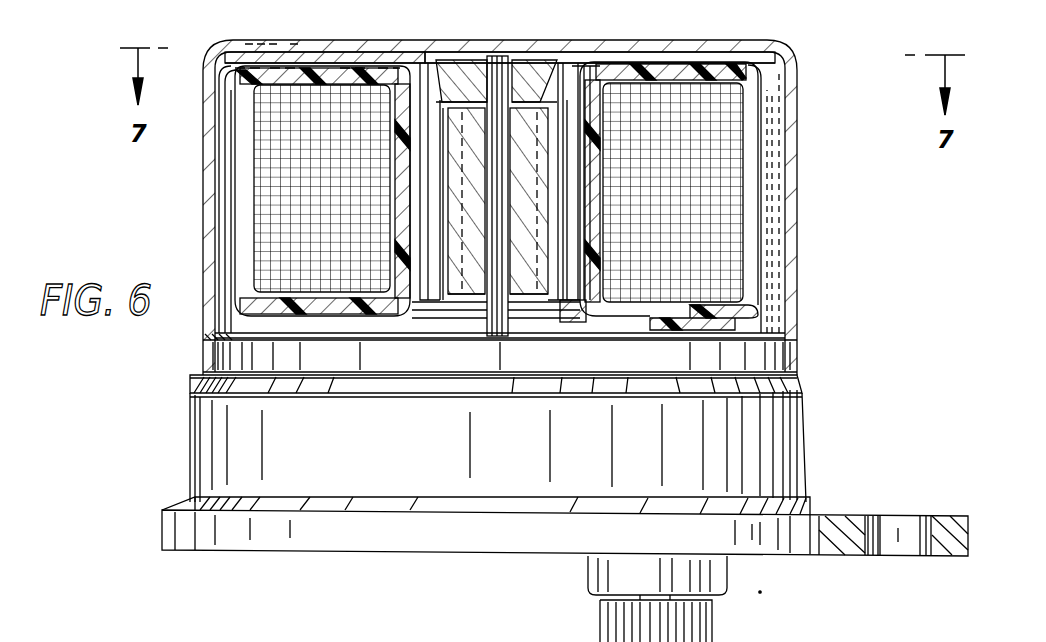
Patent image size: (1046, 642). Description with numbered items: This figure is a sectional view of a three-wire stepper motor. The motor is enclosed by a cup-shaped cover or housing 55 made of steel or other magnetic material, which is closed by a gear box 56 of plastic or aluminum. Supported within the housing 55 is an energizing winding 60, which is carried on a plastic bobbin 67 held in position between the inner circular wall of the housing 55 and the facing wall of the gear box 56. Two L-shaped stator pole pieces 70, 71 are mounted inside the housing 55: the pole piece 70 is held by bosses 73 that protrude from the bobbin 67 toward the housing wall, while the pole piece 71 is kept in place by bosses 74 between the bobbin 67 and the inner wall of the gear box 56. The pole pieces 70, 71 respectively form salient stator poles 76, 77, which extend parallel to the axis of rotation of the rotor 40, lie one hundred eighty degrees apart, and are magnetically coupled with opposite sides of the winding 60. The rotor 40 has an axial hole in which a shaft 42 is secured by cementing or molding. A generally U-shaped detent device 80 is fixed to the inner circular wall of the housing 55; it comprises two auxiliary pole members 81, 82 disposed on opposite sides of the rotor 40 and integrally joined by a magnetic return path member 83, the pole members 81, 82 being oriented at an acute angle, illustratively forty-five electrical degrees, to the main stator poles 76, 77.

The rotor 40 is at (470, 270).
The shaft 42 is at (567, 70).
The housing 55 is at (780, 232).
The gear box 56 is at (808, 442).
The energizing winding 60 is at (785, 132).
The bobbin 67 is at (790, 306).
The stator pole piece 70 is at (406, 38).
The stator pole piece 71 is at (700, 380).
The bosses 73 is at (345, 52).
The bosses 74 is at (660, 325).
The salient stator pole 76 is at (400, 292).
The salient stator pole 77 is at (568, 322).
The detent device 80 is at (466, 42).
The auxiliary pole member 81 is at (430, 270).
The auxiliary pole member 82 is at (546, 290).
The magnetic return path member 83 is at (540, 62).